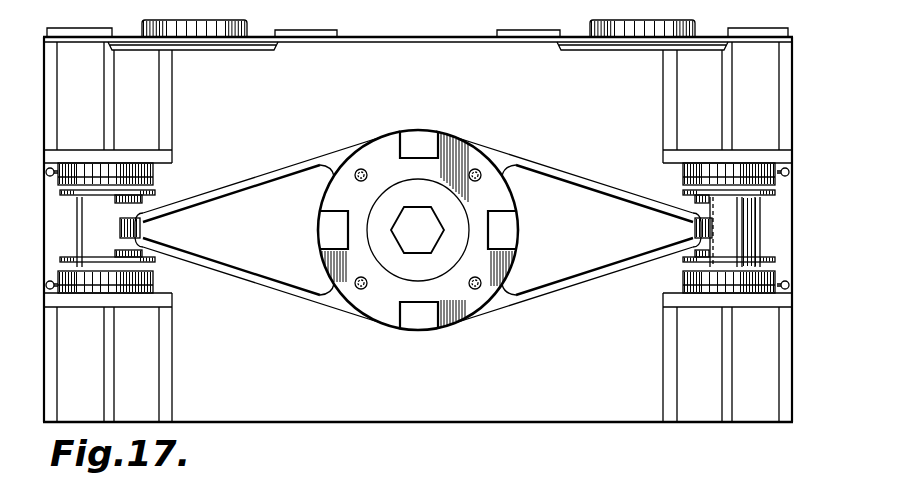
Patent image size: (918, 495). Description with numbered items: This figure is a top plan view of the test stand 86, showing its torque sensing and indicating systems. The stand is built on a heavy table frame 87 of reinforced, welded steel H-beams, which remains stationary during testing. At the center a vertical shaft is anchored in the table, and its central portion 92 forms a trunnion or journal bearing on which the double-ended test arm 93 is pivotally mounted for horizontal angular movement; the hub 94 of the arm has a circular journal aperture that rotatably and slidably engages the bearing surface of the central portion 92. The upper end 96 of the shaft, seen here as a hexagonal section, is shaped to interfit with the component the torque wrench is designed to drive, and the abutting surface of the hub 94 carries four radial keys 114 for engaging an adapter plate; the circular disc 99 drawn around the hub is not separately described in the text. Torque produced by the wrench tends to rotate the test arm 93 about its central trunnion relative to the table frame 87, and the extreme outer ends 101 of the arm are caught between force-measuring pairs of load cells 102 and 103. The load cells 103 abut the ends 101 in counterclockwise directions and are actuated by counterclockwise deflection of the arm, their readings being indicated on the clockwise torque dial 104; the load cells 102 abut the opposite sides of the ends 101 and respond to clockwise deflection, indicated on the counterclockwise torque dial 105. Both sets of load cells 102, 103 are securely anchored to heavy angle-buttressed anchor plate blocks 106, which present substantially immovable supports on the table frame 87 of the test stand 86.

The test stand 86 is at (594, 427).
The table frame 87 is at (516, 398).
The central portion 92 is at (457, 213).
The test arm 93 is at (252, 177).
The hub 94 is at (522, 174).
The upper end 96 is at (410, 253).
The disc 99 is at (457, 150).
The outer ends 101 is at (140, 219).
The load cells 102 is at (155, 172).
The load cells 103 is at (157, 285).
The clockwise torque dial 104 is at (218, 55).
The counterclockwise torque dial 105 is at (630, 55).
The anchor plate blocks 106 is at (128, 148).
The radial keys 114 is at (400, 143).